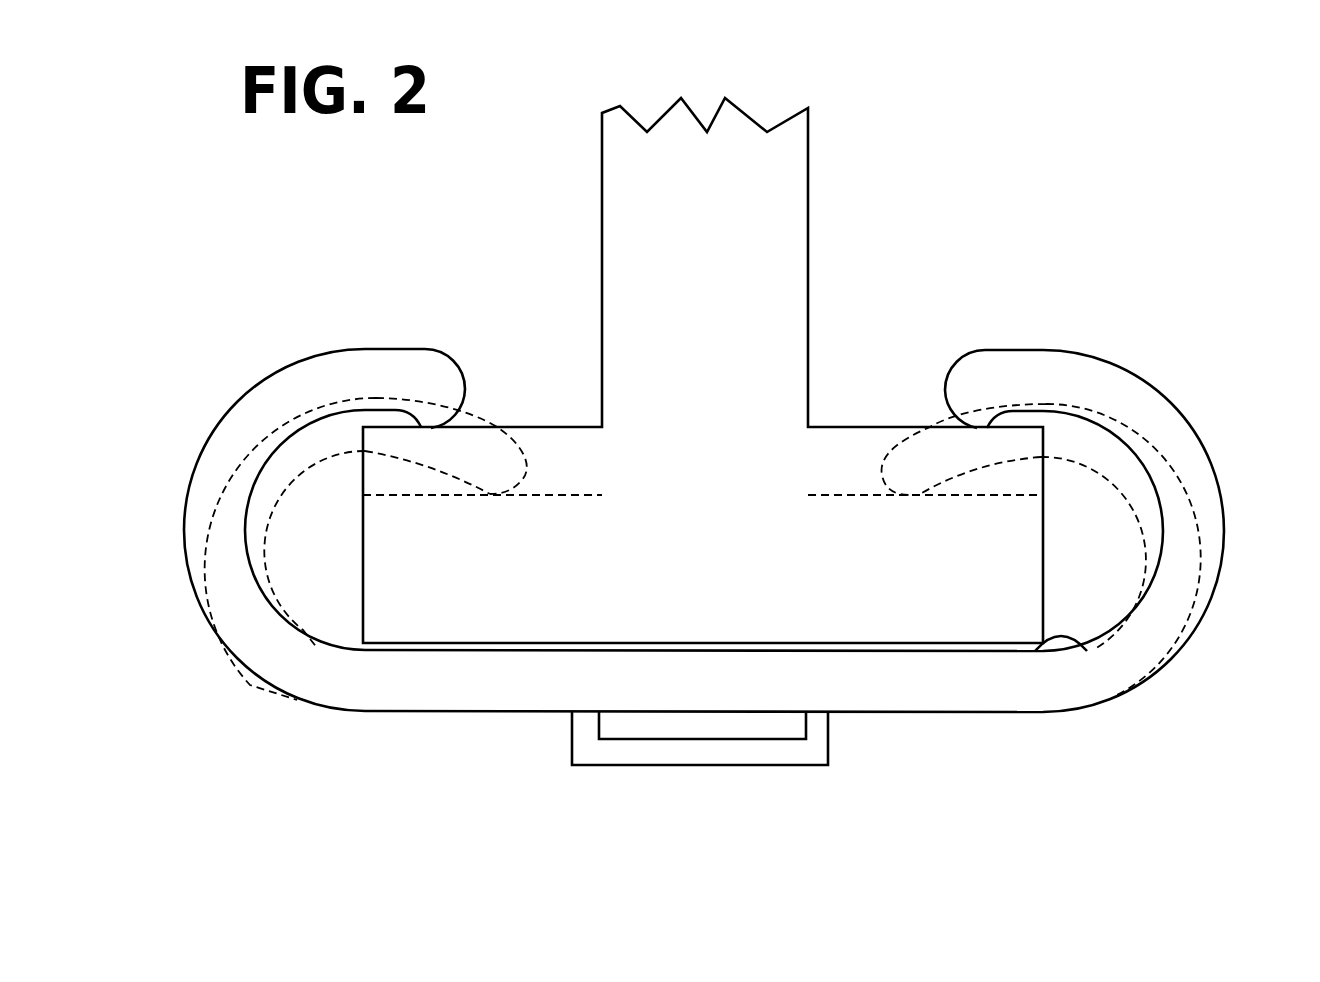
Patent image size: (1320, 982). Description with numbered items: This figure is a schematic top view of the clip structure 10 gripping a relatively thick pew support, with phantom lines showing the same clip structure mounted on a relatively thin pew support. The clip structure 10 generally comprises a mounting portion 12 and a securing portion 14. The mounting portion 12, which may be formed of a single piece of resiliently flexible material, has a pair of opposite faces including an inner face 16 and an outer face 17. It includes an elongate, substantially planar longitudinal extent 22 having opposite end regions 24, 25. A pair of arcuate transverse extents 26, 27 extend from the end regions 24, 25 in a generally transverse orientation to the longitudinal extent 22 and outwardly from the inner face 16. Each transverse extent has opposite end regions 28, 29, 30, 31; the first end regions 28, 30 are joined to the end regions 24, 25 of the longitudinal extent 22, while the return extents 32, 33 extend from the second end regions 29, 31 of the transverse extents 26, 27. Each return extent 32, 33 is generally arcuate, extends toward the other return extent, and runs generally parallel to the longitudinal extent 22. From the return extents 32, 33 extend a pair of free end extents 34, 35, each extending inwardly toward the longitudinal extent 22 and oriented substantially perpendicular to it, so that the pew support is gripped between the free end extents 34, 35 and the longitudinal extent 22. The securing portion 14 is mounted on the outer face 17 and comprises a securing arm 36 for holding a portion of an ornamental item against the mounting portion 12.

The clip structure 10 is at (1167, 157).
The mounting portion 12 is at (1138, 657).
The securing portion 14 is at (778, 750).
The inner face 16 is at (1091, 657).
The outer face 17 is at (423, 712).
The longitudinal extent 22 is at (871, 688).
The end region of longitudinal extent 24 is at (322, 670).
The end region of longitudinal extent 25 is at (1113, 675).
The transverse extent 26 is at (235, 615).
The transverse extent 27 is at (1170, 600).
The first end region of transverse extent 28 is at (262, 638).
The end region of transverse extent 29 is at (215, 472).
The first end region of transverse extent 30 is at (1157, 622).
The second end region of transverse extent 31 is at (1150, 413).
The return extent 32 is at (308, 375).
The return extent 33 is at (1055, 377).
The free end extent 34 is at (404, 374).
The free end extent 35 is at (980, 383).
The securing arm 36 is at (676, 750).